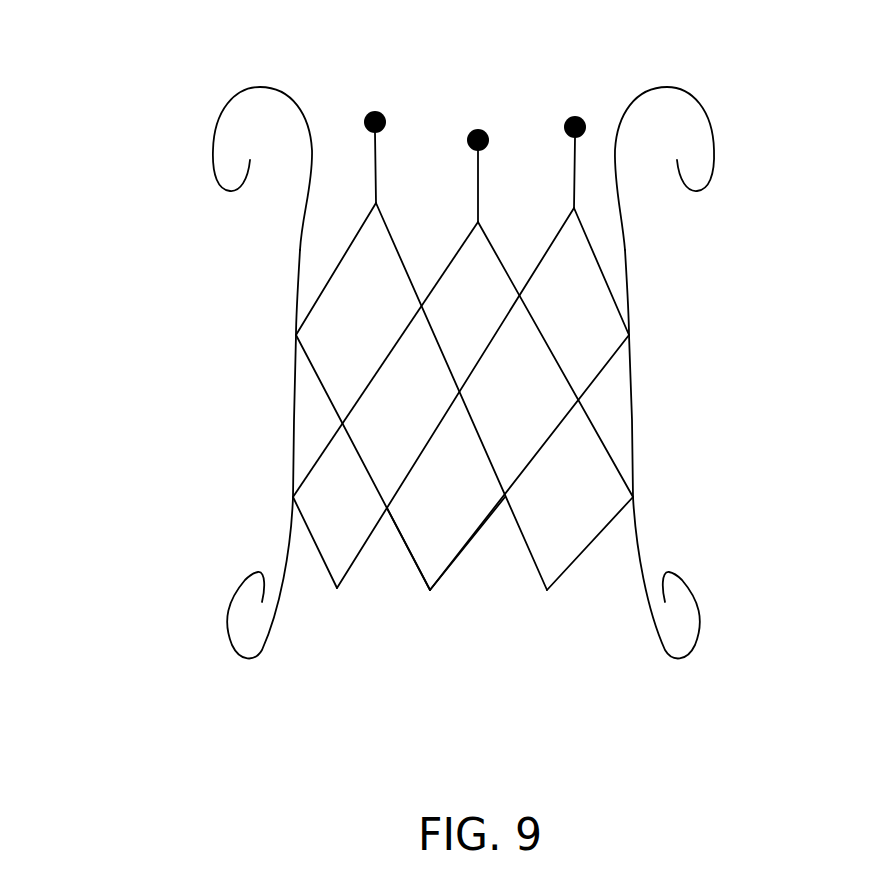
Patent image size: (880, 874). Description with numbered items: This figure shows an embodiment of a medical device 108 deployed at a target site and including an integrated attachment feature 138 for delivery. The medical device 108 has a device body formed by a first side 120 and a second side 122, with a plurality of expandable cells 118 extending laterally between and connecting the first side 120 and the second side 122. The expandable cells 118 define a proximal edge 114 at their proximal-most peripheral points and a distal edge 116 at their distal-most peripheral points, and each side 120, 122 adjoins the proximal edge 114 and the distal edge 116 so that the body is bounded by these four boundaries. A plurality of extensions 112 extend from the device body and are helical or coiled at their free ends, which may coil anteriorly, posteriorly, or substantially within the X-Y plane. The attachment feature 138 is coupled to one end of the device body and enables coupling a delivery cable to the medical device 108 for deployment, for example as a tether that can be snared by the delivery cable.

The medical device 108 is at (410, 375).
The extensions 112 is at (252, 86).
The proximal edge 114 is at (437, 630).
The distal edge 116 is at (403, 102).
The expandable cells 118 is at (610, 365).
The first side 120 is at (252, 345).
The second side 122 is at (658, 341).
The attachment feature 138 is at (612, 87).